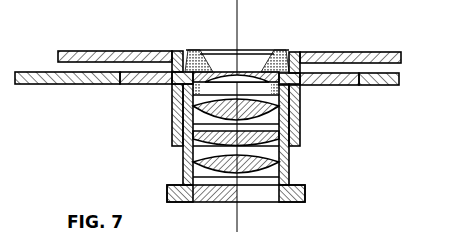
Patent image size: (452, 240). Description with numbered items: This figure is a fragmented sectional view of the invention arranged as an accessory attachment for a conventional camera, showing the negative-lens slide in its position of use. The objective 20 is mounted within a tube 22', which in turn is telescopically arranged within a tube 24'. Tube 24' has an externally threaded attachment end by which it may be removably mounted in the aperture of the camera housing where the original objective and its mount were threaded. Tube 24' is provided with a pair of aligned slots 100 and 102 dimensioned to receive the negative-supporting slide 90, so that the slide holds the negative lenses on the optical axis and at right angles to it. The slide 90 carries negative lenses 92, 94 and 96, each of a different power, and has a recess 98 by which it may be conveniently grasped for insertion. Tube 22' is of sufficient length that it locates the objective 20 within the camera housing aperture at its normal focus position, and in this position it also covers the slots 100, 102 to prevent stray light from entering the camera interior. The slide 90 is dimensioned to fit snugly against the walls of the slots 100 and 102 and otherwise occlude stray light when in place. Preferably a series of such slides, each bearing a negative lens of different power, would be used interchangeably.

The objective 20 is at (258, 207).
The tube 22' is at (206, 135).
The tube 24' is at (261, 116).
The slide 90 is at (396, 90).
The negative lens 92 is at (143, 84).
The negative lens 94 is at (199, 57).
The negative lens 96 is at (333, 85).
The recess 98 is at (39, 85).
The slot 100 is at (192, 57).
The slot 102 is at (288, 70).